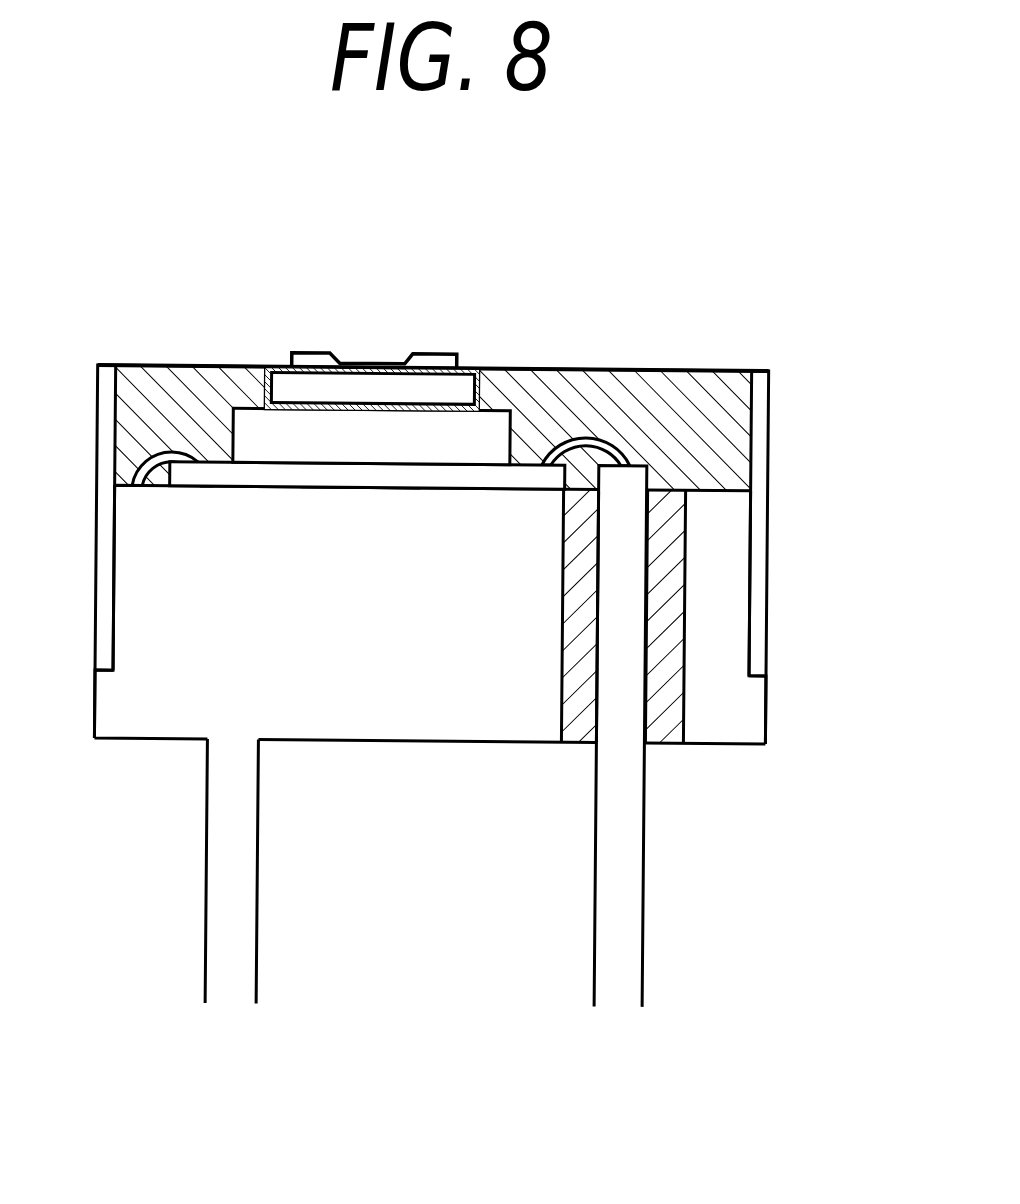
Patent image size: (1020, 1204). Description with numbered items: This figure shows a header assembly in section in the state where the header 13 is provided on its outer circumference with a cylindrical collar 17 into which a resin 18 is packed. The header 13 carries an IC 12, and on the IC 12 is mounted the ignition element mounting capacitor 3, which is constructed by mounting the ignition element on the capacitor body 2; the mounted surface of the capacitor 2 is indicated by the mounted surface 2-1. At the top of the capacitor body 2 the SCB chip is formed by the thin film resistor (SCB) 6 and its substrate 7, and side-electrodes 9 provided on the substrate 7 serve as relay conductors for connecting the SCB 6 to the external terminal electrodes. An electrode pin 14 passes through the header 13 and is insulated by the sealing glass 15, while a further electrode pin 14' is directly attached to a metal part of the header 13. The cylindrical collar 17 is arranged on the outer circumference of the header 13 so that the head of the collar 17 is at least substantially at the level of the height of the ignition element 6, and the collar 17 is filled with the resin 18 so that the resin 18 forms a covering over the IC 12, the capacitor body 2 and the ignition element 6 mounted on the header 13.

The capacitor body 2 is at (469, 440).
The mounted surface of the capacitor 2-1 is at (358, 488).
The ignition element mounting capacitor 3 is at (398, 346).
The thin film resistor (SCB) 6 is at (364, 369).
The substrate 7 is at (420, 383).
The side-electrodes 9 is at (473, 380).
The IC 12 is at (225, 472).
The header 13 is at (438, 693).
The electrode pin 14 is at (702, 736).
The electrode pin 14' is at (151, 871).
The sealing glass 15 is at (668, 619).
The cylindrical collar 17 is at (759, 437).
The resin 18 is at (668, 408).